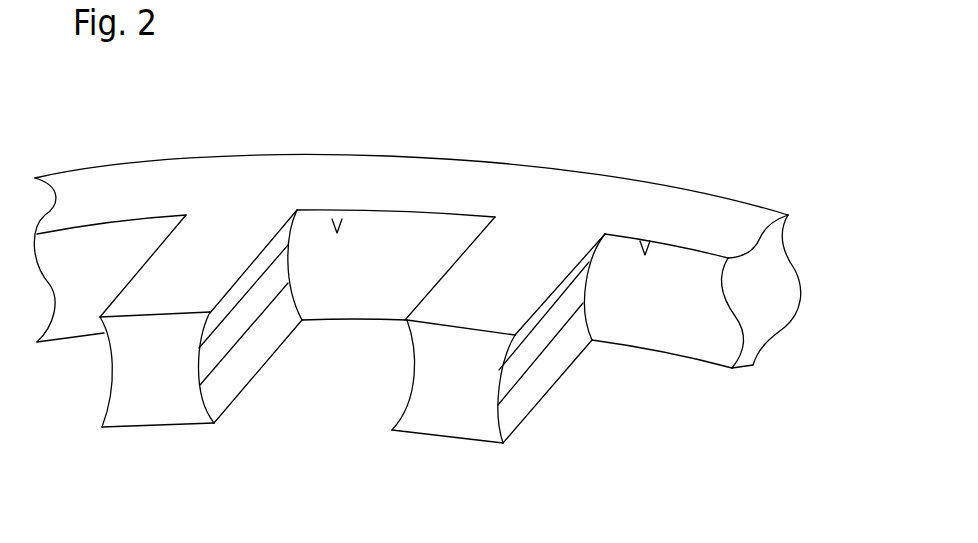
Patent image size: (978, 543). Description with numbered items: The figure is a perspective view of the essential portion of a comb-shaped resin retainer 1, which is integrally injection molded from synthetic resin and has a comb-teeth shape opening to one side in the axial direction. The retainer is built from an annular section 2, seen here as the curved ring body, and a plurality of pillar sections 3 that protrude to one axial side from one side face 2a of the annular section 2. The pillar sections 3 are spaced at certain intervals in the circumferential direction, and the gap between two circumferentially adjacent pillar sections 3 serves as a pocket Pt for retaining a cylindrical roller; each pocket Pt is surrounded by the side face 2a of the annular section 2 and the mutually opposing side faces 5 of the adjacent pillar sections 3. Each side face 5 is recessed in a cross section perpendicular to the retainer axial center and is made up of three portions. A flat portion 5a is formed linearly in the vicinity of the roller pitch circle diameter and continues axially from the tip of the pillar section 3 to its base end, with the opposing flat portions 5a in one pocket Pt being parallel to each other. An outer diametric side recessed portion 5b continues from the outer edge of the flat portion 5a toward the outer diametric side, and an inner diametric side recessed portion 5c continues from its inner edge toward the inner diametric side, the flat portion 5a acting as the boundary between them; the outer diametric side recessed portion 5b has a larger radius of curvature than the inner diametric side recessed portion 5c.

The comb-shaped resin retainer 1 is at (620, 112).
The annular section 2 is at (742, 220).
The side face of the annular section 2a is at (338, 293).
The pillar section 3 is at (148, 405).
The side face of the pillar section 5 is at (280, 429).
The flat portion 5a is at (197, 365).
The outer diametric side recessed portion 5b is at (199, 343).
The inner diametric side recessed portion 5c is at (203, 397).
The pocket Pt is at (337, 233).